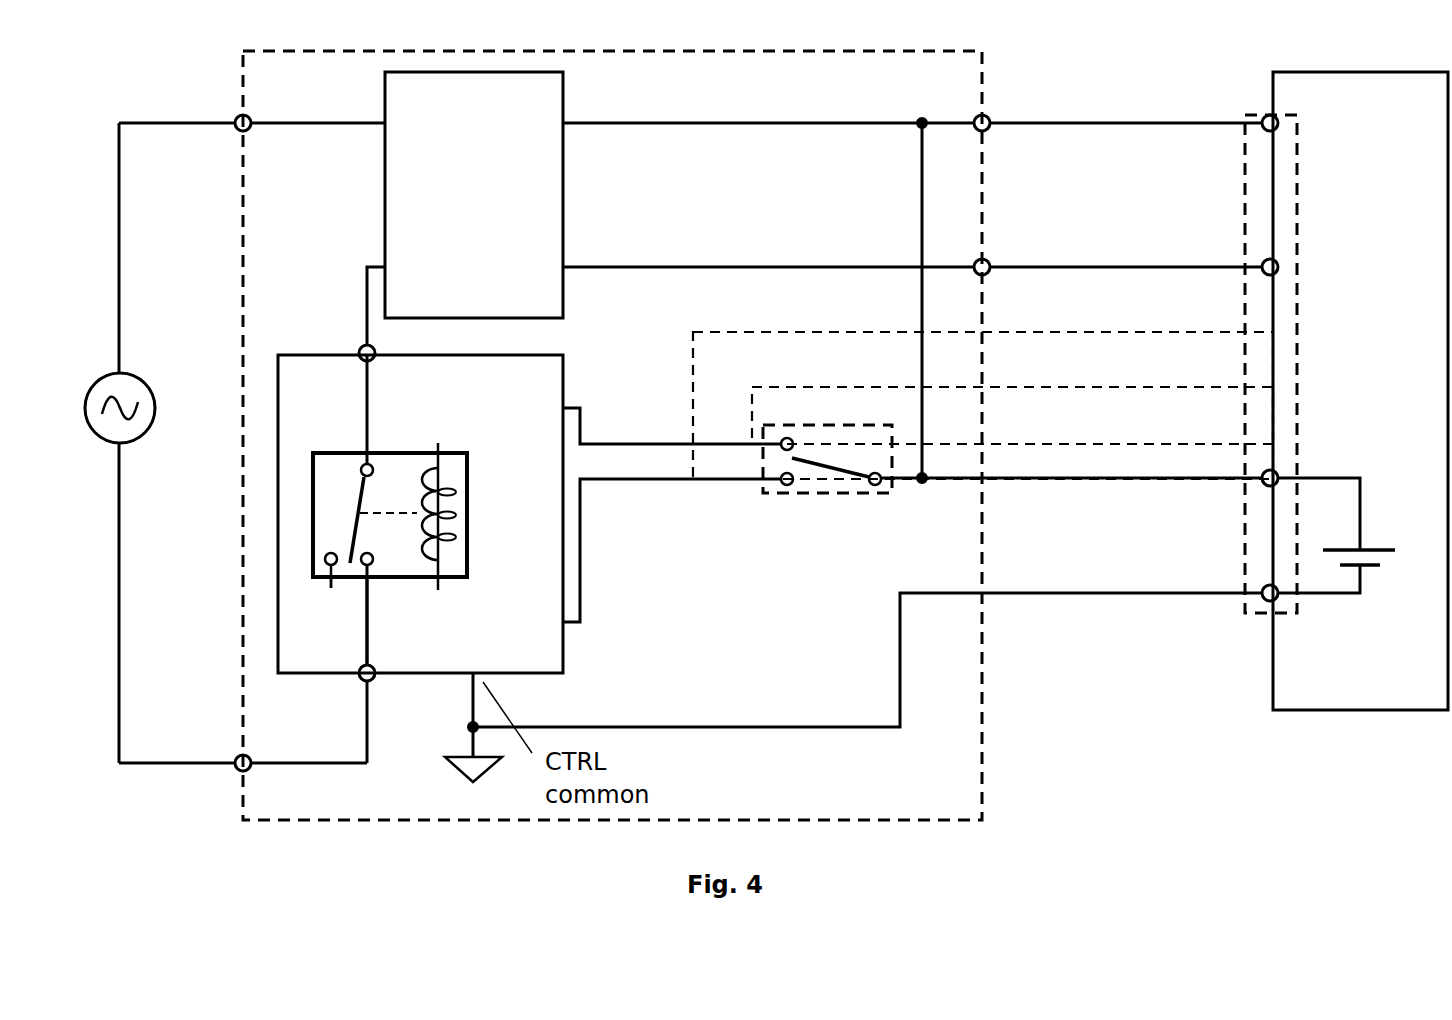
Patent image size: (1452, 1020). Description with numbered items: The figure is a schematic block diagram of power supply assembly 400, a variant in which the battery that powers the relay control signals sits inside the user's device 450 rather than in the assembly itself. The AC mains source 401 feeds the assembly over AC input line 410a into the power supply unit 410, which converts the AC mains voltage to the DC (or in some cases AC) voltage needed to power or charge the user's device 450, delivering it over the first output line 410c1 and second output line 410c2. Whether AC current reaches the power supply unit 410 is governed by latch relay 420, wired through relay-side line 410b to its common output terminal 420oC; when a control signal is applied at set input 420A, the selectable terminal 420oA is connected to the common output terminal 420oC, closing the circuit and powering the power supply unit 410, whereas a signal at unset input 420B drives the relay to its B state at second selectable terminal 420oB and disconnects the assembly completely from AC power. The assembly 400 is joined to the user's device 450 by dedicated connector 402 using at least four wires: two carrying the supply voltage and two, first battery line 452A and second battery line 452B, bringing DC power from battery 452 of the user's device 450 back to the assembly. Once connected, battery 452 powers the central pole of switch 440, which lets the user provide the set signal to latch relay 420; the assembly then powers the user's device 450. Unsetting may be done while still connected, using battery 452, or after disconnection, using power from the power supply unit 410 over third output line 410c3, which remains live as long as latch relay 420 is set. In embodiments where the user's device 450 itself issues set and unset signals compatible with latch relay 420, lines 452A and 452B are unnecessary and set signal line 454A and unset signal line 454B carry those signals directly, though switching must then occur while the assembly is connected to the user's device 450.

The power supply assembly 400 is at (818, 796).
The AC mains source 401 is at (160, 443).
The dedicated connector 402 is at (1235, 613).
The power supply unit 410 is at (478, 268).
The AC input line of power supply unit 410a is at (310, 112).
The relay-side line of power supply unit 410b is at (348, 284).
The first output line of power supply unit 410c1 is at (920, 112).
The second output line of power supply unit 410c2 is at (920, 255).
The third output line of power supply unit 410c3 is at (876, 303).
The latch relay 420 is at (445, 416).
The selectable terminal of latch relay 420oA is at (380, 580).
The second selectable terminal of latch relay 420oB is at (310, 578).
The common output terminal of latch relay 420oC is at (360, 347).
The set input of latch relay 420A is at (672, 407).
The unset input of latch relay 420B is at (672, 550).
The switch 440 is at (827, 497).
The user's device 450 is at (1360, 391).
The battery 452 is at (1339, 573).
The first battery line 452A is at (1079, 466).
The second battery line 452B is at (875, 646).
The set signal line 454A is at (1012, 399).
The unset signal line 454B is at (983, 387).